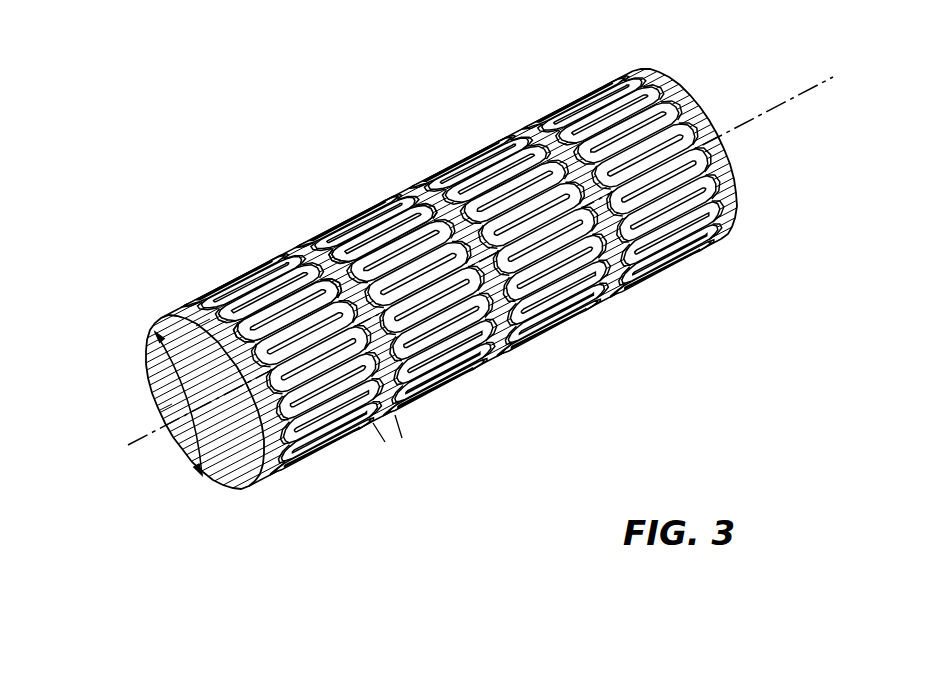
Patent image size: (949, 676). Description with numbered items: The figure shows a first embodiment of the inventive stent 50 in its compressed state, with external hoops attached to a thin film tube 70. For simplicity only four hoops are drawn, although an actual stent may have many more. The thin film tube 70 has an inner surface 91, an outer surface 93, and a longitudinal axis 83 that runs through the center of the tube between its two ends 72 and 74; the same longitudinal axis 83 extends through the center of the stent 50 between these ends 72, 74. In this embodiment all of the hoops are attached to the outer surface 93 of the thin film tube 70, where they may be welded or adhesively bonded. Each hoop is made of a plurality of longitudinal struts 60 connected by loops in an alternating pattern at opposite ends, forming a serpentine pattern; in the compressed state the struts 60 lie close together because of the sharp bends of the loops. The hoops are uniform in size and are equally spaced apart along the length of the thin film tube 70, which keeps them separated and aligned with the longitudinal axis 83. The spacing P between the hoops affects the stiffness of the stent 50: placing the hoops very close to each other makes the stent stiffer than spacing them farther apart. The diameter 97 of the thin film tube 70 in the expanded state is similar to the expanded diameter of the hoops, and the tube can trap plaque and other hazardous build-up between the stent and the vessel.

The stent 50 is at (247, 228).
The longitudinal strut 60 is at (403, 240).
The thin film tube 70 is at (346, 283).
The end 72 is at (688, 83).
The end 74 is at (188, 472).
The longitudinal axis 83 is at (797, 96).
The inner surface 91 is at (165, 407).
The outer surface 93 is at (202, 323).
The diameter 97 is at (172, 387).
The spacing P is at (405, 430).